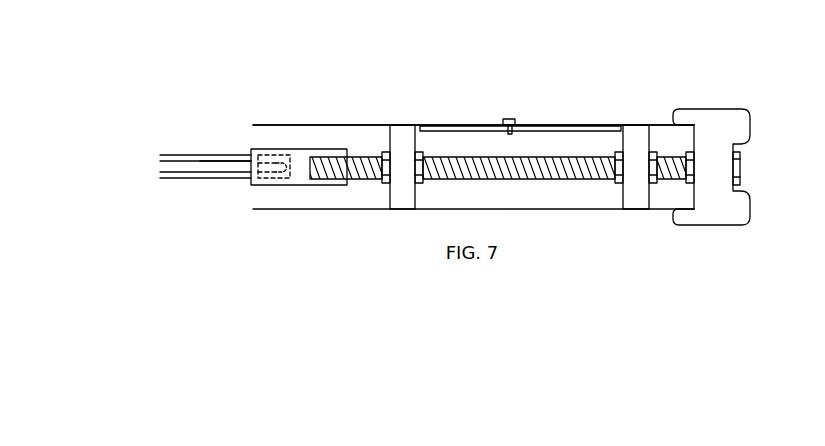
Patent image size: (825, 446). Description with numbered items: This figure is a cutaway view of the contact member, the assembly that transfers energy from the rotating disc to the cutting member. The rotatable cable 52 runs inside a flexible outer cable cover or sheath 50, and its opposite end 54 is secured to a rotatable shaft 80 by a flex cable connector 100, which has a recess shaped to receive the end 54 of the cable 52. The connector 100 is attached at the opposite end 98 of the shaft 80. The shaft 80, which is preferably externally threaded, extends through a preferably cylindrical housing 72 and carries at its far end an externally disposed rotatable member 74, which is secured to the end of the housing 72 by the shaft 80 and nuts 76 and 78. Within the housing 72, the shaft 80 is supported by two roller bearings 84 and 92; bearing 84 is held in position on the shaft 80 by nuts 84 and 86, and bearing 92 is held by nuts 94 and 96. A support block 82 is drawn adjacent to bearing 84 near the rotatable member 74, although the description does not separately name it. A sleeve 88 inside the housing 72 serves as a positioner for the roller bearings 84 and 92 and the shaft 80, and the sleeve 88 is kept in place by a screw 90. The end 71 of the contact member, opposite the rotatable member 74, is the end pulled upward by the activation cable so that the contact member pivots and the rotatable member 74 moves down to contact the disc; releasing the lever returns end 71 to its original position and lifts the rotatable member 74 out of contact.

The flexible outer cable cover 50 is at (205, 154).
The rotatable cable 52 is at (188, 173).
The opposite end of cable 54 is at (244, 162).
The end of contact member 71 is at (253, 124).
The housing 72 is at (333, 124).
The rotatable member 74 is at (706, 109).
The nut 76 is at (740, 163).
The nut 78 is at (685, 183).
The rotatable shaft 80 is at (510, 173).
The rear support block 82 is at (632, 197).
The roller bearing 84 is at (656, 152).
The nut 86 is at (618, 152).
The sleeve 88 is at (549, 127).
The screw 90 is at (510, 119).
The roller bearing 92 is at (400, 130).
The nut 94 is at (419, 152).
The nut 96 is at (384, 152).
The opposite end of shaft 98 is at (310, 179).
The flex cable connector 100 is at (278, 149).